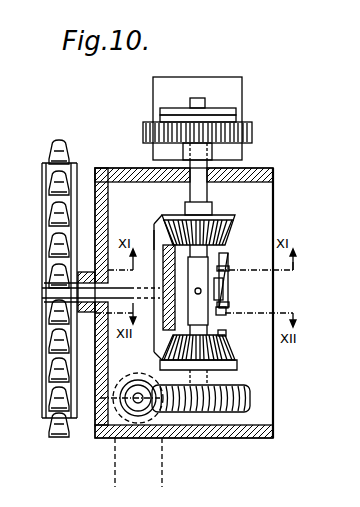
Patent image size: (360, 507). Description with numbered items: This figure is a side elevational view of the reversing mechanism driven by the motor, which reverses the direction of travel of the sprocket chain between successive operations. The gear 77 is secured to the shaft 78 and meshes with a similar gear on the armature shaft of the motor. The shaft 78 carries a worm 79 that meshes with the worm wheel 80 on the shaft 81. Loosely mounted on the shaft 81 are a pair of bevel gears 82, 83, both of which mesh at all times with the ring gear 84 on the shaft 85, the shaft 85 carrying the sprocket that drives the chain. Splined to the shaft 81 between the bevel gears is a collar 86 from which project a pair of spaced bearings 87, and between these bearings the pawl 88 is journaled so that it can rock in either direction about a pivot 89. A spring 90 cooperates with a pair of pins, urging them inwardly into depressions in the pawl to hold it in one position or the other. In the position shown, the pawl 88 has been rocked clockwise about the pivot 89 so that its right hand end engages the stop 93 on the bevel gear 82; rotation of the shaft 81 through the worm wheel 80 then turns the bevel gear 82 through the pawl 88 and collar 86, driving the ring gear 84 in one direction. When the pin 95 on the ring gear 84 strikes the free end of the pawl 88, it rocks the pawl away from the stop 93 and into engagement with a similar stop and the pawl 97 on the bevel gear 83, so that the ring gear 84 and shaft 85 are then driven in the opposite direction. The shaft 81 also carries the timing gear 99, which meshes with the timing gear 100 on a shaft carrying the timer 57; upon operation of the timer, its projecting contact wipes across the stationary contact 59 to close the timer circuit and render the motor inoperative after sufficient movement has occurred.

The timer 57 is at (232, 108).
The stationary contact 59 is at (200, 98).
The timing gear 99 is at (225, 122).
The timing gear 100 is at (252, 130).
The shaft 78 is at (97, 416).
The shaft 85 is at (42, 290).
The pawl 97 is at (184, 247).
The bevel gear 83 is at (233, 221).
The collar 86 is at (180, 326).
The pin 95 is at (152, 250).
The pawl 88 is at (228, 256).
The pivot 89 is at (224, 290).
The bearings 87 is at (226, 312).
The stop 93 is at (226, 334).
The bevel gear 82 is at (238, 357).
The shaft 81 is at (212, 374).
The worm wheel 80 is at (225, 412).
The ring gear 84 is at (150, 393).
The worm 79 is at (138, 398).
The gear 77 is at (138, 462).
The spring 90 is at (293, 270).